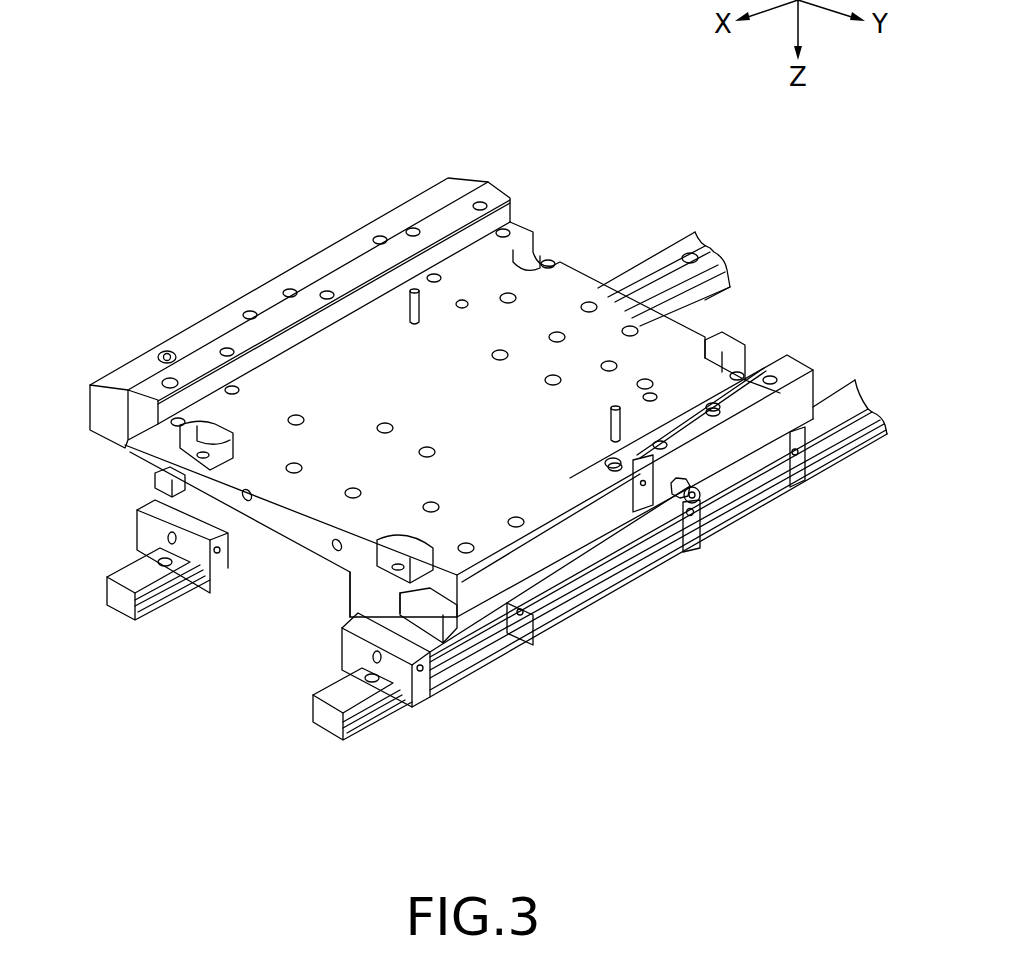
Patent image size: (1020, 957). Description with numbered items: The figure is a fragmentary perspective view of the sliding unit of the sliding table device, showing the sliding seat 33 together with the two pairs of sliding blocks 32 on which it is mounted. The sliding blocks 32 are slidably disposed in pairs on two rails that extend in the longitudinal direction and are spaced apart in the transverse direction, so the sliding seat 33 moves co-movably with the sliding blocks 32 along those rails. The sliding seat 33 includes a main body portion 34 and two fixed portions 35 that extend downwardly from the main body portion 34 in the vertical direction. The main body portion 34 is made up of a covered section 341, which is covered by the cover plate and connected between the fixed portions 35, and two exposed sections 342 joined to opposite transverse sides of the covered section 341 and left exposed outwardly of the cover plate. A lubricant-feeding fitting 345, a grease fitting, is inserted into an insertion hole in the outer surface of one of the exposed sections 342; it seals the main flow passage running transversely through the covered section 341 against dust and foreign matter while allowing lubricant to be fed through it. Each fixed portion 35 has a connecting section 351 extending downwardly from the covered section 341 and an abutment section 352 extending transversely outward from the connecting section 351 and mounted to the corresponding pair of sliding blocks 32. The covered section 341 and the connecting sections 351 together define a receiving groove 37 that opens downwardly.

The sliding seat 33 is at (465, 172).
The exposed section 342 is at (403, 214).
The main body portion 34 is at (597, 283).
The covered section 341 is at (469, 419).
The sliding block 32 is at (470, 672).
The fixed portion 35 is at (222, 510).
The connecting section 351 is at (283, 603).
The abutment section 352 is at (160, 489).
The receiving groove 37 is at (320, 572).
The lubricant-feeding fitting 345 is at (699, 507).